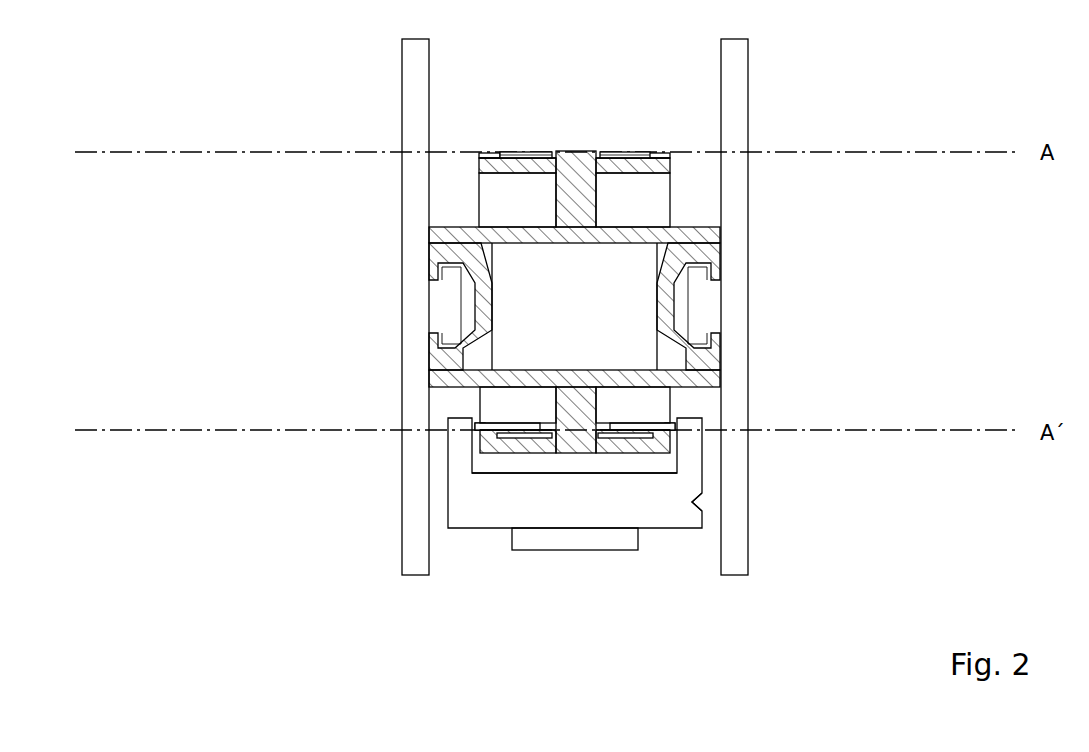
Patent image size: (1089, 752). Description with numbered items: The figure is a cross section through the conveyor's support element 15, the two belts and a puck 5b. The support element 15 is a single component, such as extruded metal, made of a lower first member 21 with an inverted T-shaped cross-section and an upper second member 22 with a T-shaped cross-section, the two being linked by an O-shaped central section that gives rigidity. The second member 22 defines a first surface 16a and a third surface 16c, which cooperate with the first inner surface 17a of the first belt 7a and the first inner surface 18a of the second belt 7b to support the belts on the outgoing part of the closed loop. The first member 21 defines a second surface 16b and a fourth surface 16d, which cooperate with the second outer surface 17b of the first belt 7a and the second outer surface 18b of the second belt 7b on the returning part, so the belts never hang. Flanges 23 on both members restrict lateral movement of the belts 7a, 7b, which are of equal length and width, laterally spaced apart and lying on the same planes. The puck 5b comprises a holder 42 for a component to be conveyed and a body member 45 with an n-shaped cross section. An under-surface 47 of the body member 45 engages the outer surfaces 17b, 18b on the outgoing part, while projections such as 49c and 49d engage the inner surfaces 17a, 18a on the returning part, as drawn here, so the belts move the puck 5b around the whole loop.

The puck 5b is at (693, 533).
The first belt 7a is at (532, 150).
The second belt 7b is at (617, 150).
The support element 15 is at (708, 238).
The first surface 16a is at (525, 148).
The second surface 16b is at (510, 438).
The third surface 16c is at (623, 150).
The fourth surface 16d is at (630, 440).
The first inner surface of the first belt 17a is at (503, 173).
The second outer surface of the first belt 17b is at (522, 152).
The first inner surface of the second belt 18a is at (643, 172).
The second outer surface of the second belt 18b is at (628, 150).
The first member 21 is at (542, 418).
The second member 22 is at (552, 202).
The flanges 23 is at (490, 153).
The holder 42 is at (638, 548).
The body member 45 is at (588, 518).
The under-surface 47 is at (553, 468).
The projection 49c is at (677, 410).
The projection 49d is at (505, 420).